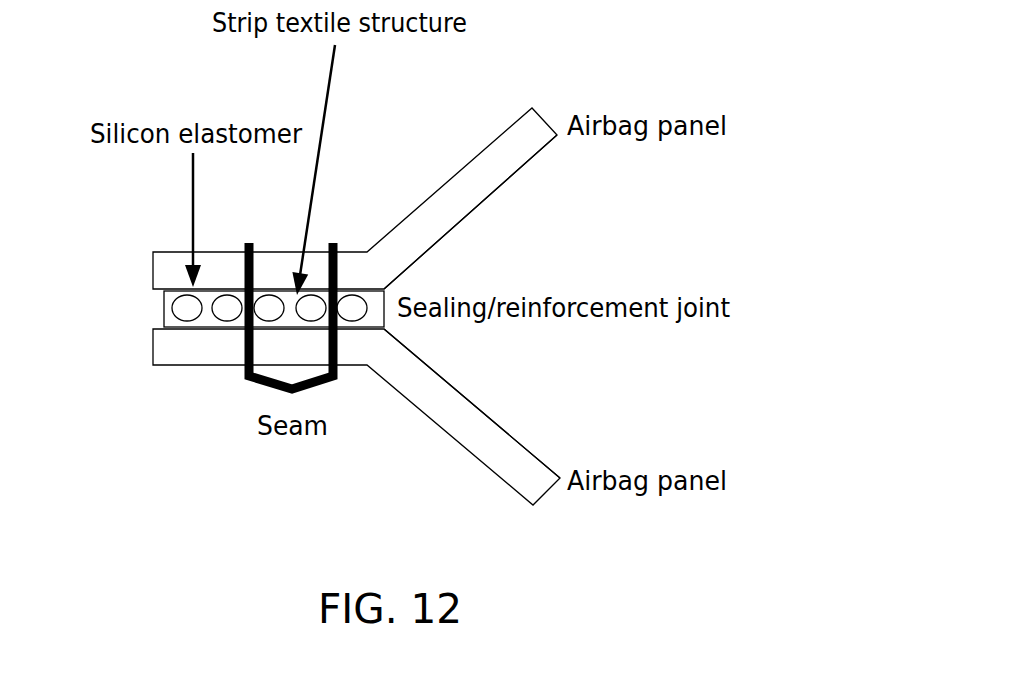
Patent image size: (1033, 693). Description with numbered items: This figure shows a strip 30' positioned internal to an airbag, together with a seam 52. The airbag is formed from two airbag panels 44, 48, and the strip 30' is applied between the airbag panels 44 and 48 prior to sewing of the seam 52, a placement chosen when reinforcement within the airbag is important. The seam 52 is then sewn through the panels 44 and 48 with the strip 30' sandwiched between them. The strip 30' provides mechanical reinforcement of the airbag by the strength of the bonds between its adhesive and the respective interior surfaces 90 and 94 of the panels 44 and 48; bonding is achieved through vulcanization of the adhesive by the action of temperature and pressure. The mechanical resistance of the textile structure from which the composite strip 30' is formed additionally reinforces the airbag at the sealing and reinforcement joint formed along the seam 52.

The airbag panel 44 is at (402, 215).
The airbag panel 48 is at (482, 463).
The interior surface 90 is at (475, 204).
The interior surface 94 is at (452, 367).
The strip 30' is at (204, 357).
The seam 52 is at (252, 405).